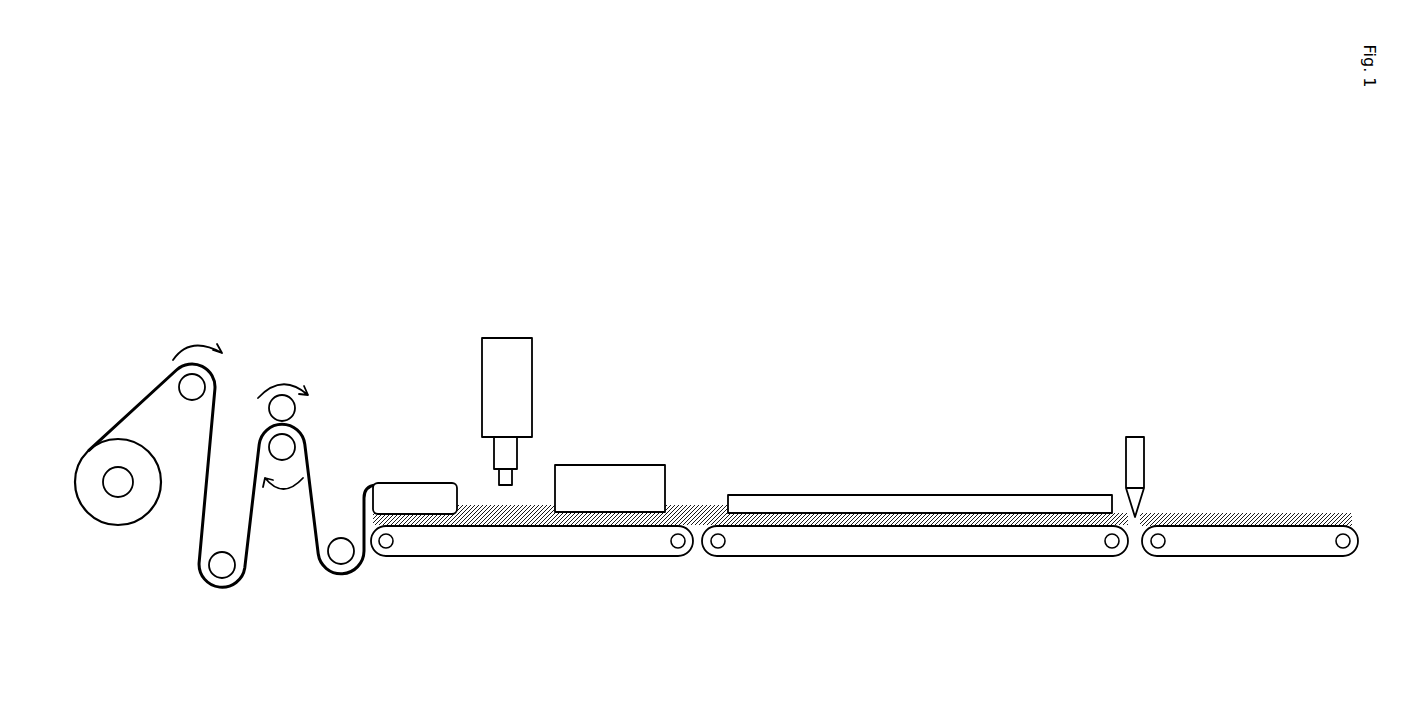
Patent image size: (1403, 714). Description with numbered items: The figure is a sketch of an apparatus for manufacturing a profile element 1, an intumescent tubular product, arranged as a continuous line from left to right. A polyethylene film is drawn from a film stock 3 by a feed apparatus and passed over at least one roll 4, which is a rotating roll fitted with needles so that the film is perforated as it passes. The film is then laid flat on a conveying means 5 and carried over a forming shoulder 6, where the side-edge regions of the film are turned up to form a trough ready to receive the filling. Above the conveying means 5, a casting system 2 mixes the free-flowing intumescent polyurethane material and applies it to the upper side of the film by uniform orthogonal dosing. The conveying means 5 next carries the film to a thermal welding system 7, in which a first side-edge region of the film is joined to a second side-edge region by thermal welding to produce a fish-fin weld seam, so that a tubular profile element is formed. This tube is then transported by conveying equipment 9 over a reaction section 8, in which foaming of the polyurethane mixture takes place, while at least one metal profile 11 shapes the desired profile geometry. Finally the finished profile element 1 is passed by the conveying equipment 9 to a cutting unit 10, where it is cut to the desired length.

The profile element 1 is at (1227, 515).
The casting system 2 is at (495, 368).
The film stock 3 is at (117, 508).
The roll 4 is at (279, 412).
The conveying means 5 is at (405, 542).
The forming shoulder 6 is at (388, 493).
The thermal welding system 7 is at (623, 492).
The reaction section 8 is at (758, 515).
The conveying equipment 9 is at (920, 535).
The cutting unit 10 is at (1135, 470).
The metal profile 11 is at (1002, 502).